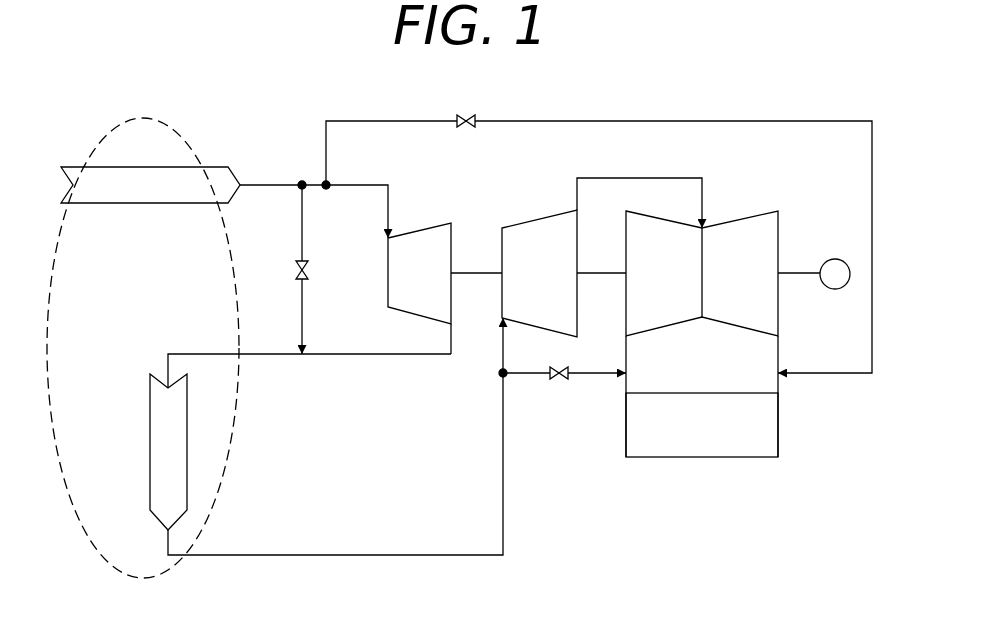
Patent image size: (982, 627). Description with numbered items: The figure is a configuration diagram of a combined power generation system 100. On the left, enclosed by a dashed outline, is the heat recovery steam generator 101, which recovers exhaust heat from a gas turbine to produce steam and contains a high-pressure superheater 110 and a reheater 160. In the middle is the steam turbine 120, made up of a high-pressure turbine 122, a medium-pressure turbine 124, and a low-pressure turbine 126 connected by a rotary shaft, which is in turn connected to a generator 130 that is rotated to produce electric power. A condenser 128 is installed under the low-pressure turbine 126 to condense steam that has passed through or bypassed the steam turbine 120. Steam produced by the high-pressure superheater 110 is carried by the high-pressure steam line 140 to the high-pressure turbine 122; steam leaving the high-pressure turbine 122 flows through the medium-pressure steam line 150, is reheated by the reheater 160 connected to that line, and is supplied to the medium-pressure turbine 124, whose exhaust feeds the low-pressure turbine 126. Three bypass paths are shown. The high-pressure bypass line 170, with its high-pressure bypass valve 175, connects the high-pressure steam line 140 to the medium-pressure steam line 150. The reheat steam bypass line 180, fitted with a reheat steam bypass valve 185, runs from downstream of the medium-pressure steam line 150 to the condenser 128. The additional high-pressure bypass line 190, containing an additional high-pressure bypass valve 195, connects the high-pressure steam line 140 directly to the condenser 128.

The combined power generation system 100 is at (96, 90).
The heat recovery steam generator 101 is at (98, 548).
The high-pressure superheater 110 is at (213, 167).
The steam turbine 120 is at (697, 548).
The high-pressure turbine 122 is at (420, 232).
The medium-pressure turbine 124 is at (536, 220).
The low-pressure turbine 126 is at (740, 222).
The condenser 128 is at (779, 425).
The generator 130 is at (830, 259).
The high-pressure steam line 140 is at (350, 185).
The medium-pressure steam line 150 is at (211, 354).
The reheater 160 is at (150, 440).
The high-pressure bypass line 170 is at (300, 226).
The high-pressure bypass valve 175 is at (300, 273).
The reheat steam bypass line 180 is at (527, 375).
The reheat steam bypass valve 185 is at (560, 381).
The additional high-pressure bypass line 190 is at (377, 121).
The additional high-pressure bypass valve 195 is at (466, 116).